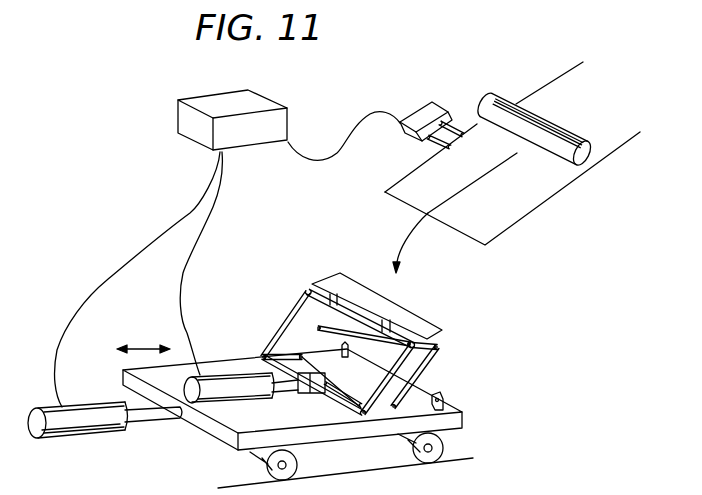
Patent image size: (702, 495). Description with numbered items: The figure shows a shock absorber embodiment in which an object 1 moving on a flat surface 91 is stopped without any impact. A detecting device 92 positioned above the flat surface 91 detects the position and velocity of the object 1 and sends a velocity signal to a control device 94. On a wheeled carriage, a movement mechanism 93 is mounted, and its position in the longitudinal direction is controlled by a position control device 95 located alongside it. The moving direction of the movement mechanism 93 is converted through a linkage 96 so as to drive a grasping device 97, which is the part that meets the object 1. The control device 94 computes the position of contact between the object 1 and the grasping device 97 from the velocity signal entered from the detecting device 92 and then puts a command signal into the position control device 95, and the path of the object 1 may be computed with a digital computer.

The object 1 is at (503, 93).
The flat surface 91 is at (562, 193).
The detecting device 92 is at (432, 102).
The movement mechanism 93 is at (218, 403).
The control device 94 is at (288, 108).
The position control device 95 is at (103, 437).
The linkage 96 is at (440, 367).
The grasping device 97 is at (443, 333).